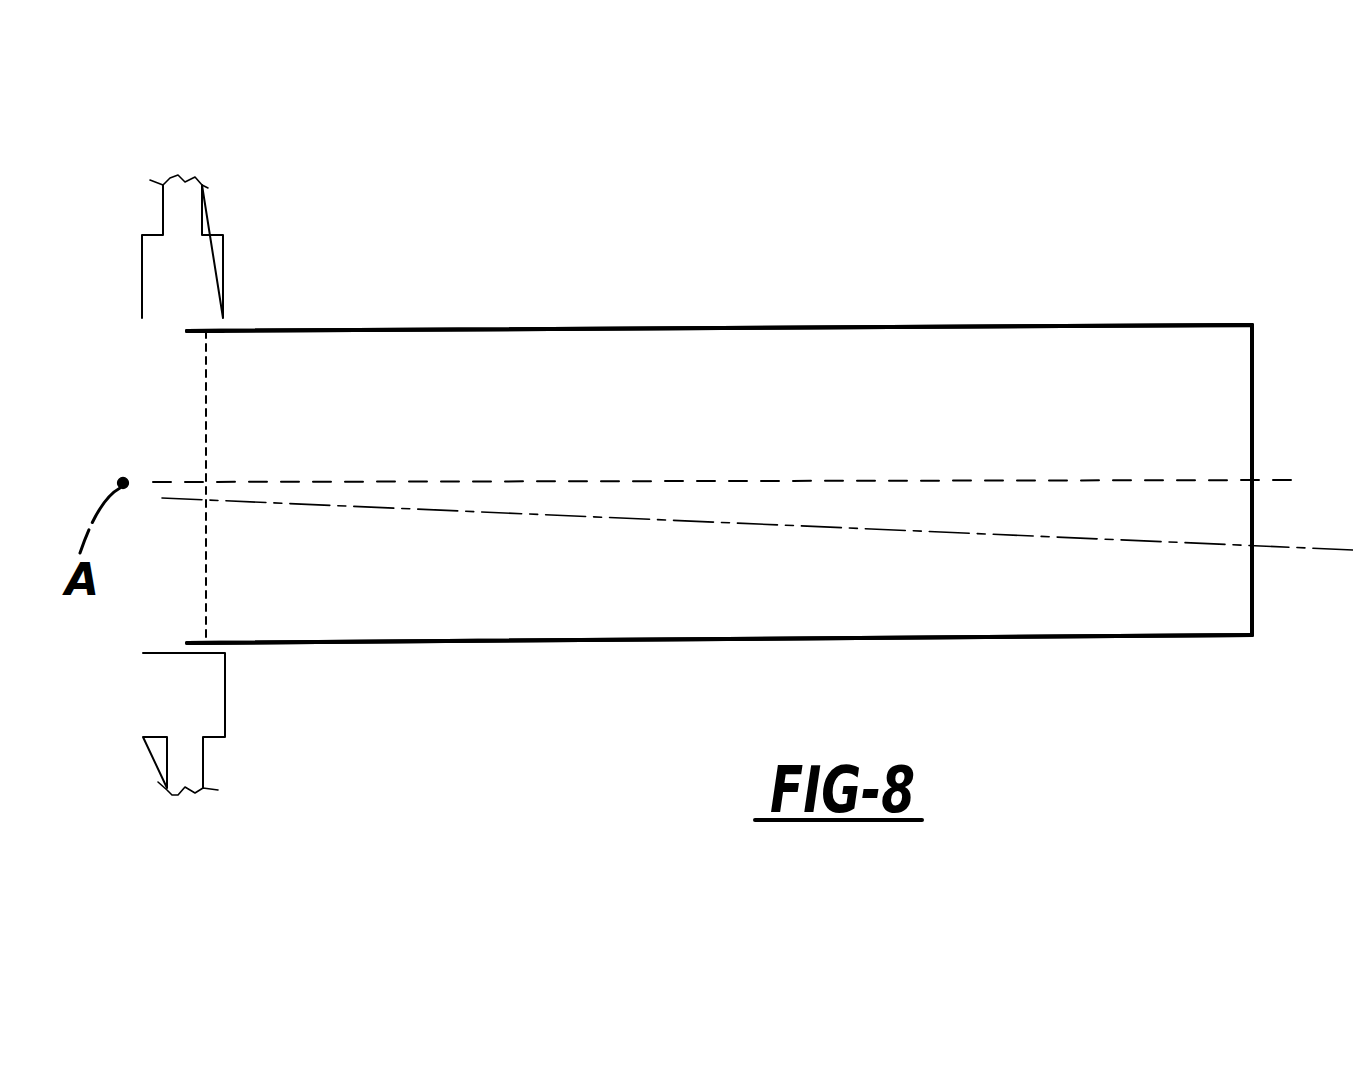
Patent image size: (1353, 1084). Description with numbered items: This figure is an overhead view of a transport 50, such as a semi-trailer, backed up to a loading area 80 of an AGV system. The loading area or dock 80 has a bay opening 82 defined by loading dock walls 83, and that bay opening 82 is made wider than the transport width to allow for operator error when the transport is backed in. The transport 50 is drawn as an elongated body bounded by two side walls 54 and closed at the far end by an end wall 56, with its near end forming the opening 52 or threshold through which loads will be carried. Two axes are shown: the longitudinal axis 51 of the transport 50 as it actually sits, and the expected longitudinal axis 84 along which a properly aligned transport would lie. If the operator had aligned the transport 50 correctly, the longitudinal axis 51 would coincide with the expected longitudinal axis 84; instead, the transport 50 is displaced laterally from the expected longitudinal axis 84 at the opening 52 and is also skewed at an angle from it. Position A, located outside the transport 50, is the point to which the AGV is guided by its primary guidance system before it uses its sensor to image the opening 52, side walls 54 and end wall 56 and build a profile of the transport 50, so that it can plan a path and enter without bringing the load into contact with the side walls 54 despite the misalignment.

The transport 50 is at (1186, 296).
The longitudinal axis 51 is at (520, 482).
The opening 52 is at (205, 573).
The side walls 54 is at (425, 327).
The end wall 56 is at (1253, 603).
The loading area 80 is at (99, 452).
The bay opening 82 is at (160, 350).
The loading dock walls 83 is at (192, 275).
The expected longitudinal axis 84 is at (1065, 538).